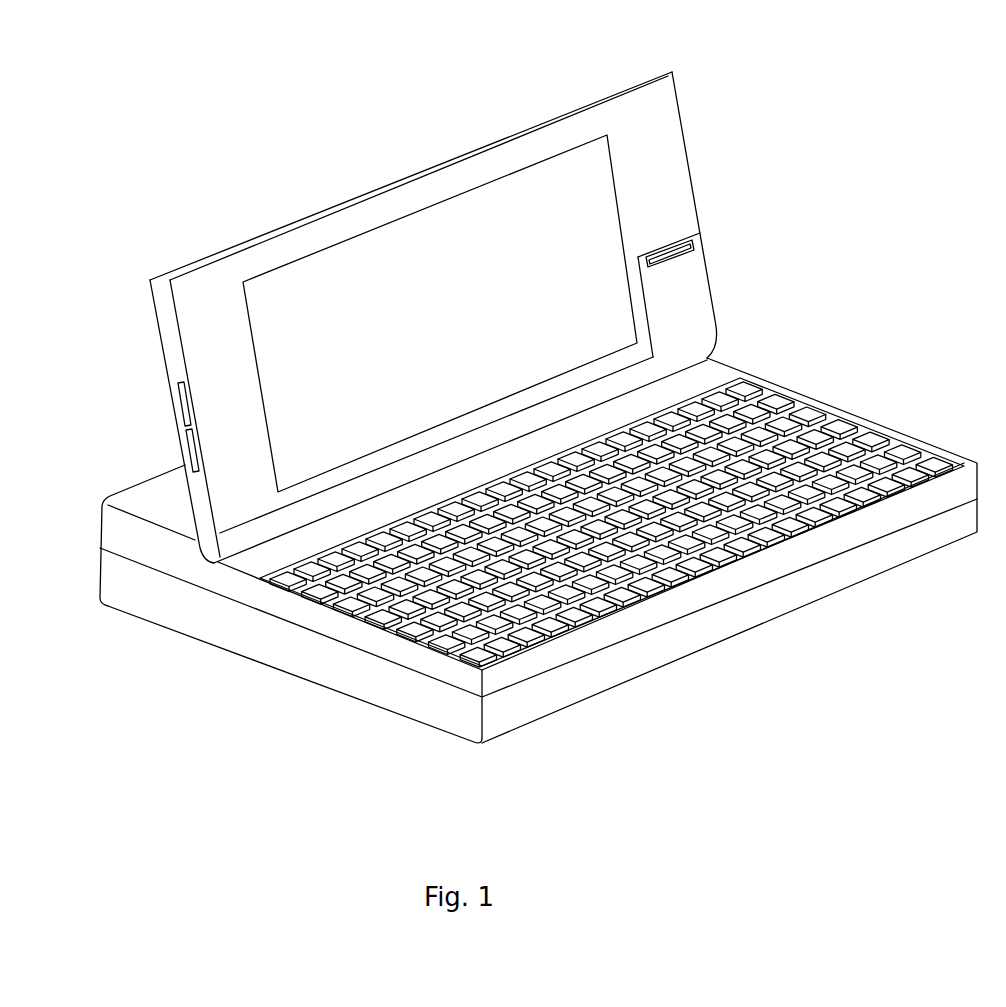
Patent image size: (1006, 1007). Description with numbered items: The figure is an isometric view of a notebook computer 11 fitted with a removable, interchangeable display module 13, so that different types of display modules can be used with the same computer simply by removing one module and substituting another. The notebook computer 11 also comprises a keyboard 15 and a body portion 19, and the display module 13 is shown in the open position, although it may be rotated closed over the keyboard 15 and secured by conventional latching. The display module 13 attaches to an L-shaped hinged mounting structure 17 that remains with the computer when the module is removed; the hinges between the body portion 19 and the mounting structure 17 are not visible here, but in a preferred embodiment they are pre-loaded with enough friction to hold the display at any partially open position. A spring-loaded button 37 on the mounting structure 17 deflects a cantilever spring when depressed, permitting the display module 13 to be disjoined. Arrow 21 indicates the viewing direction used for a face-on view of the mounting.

The notebook computer 11 is at (538, 398).
The display module 13 is at (460, 308).
The keyboard 15 is at (851, 421).
The mounting structure 17 is at (696, 298).
The body portion 19 is at (174, 598).
The arrow 21 is at (637, 402).
The spring-loaded button 37 is at (678, 236).